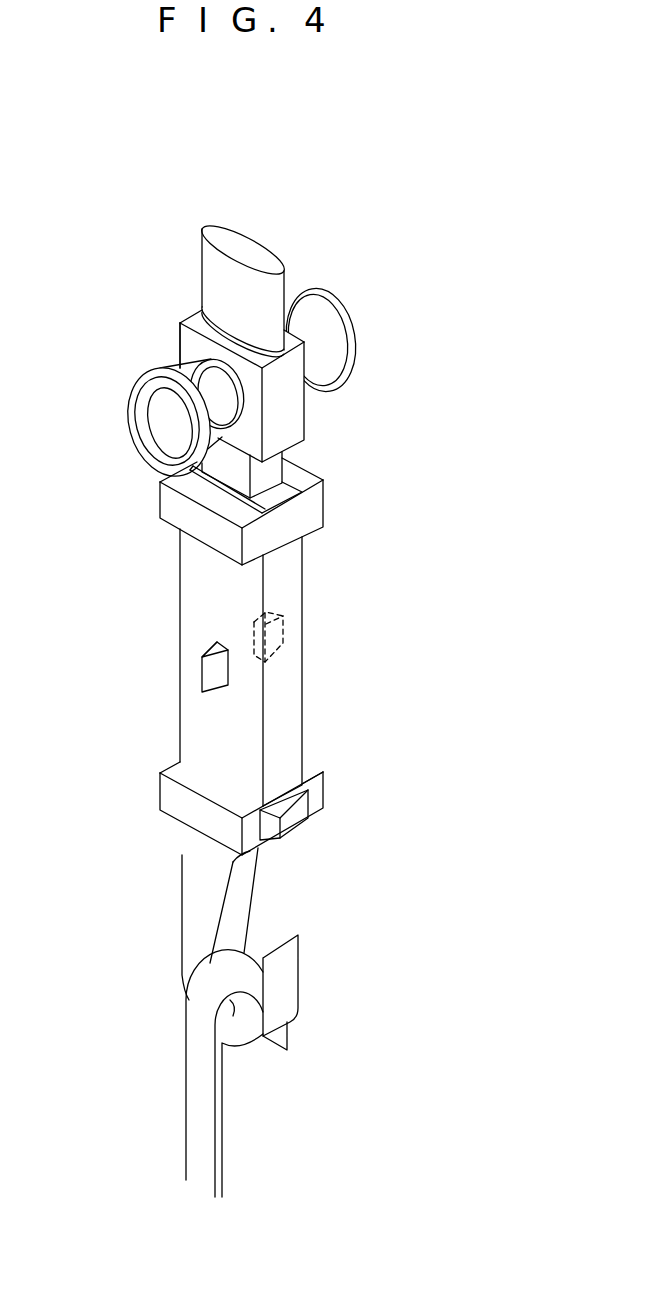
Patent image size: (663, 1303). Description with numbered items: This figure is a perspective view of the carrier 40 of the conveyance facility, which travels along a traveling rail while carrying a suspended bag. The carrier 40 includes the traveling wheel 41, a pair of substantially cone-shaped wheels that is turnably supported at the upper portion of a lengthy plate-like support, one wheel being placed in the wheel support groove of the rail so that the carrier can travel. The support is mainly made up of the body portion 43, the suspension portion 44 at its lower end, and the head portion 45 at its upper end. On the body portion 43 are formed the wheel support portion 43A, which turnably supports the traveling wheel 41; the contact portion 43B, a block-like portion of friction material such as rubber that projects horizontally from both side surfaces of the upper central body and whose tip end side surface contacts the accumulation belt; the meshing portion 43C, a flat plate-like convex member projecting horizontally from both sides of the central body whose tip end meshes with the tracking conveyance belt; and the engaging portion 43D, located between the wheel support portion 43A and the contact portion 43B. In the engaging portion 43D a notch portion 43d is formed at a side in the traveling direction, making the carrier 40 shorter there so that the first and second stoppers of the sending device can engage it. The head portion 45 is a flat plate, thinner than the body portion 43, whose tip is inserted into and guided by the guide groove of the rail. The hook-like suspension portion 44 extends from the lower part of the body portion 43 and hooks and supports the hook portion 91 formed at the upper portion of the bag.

The carrier 40 is at (196, 199).
The traveling wheel 41 is at (218, 407).
The body portion 43 is at (197, 598).
The wheel support portion 43A is at (182, 343).
The contact portion 43B is at (168, 505).
The meshing portion 43C is at (283, 617).
The engaging portion 43D is at (227, 463).
The notch portion 43d is at (272, 472).
The suspension portion 44 is at (197, 893).
The head portion 45 is at (252, 255).
The hook portion 91 is at (210, 1127).